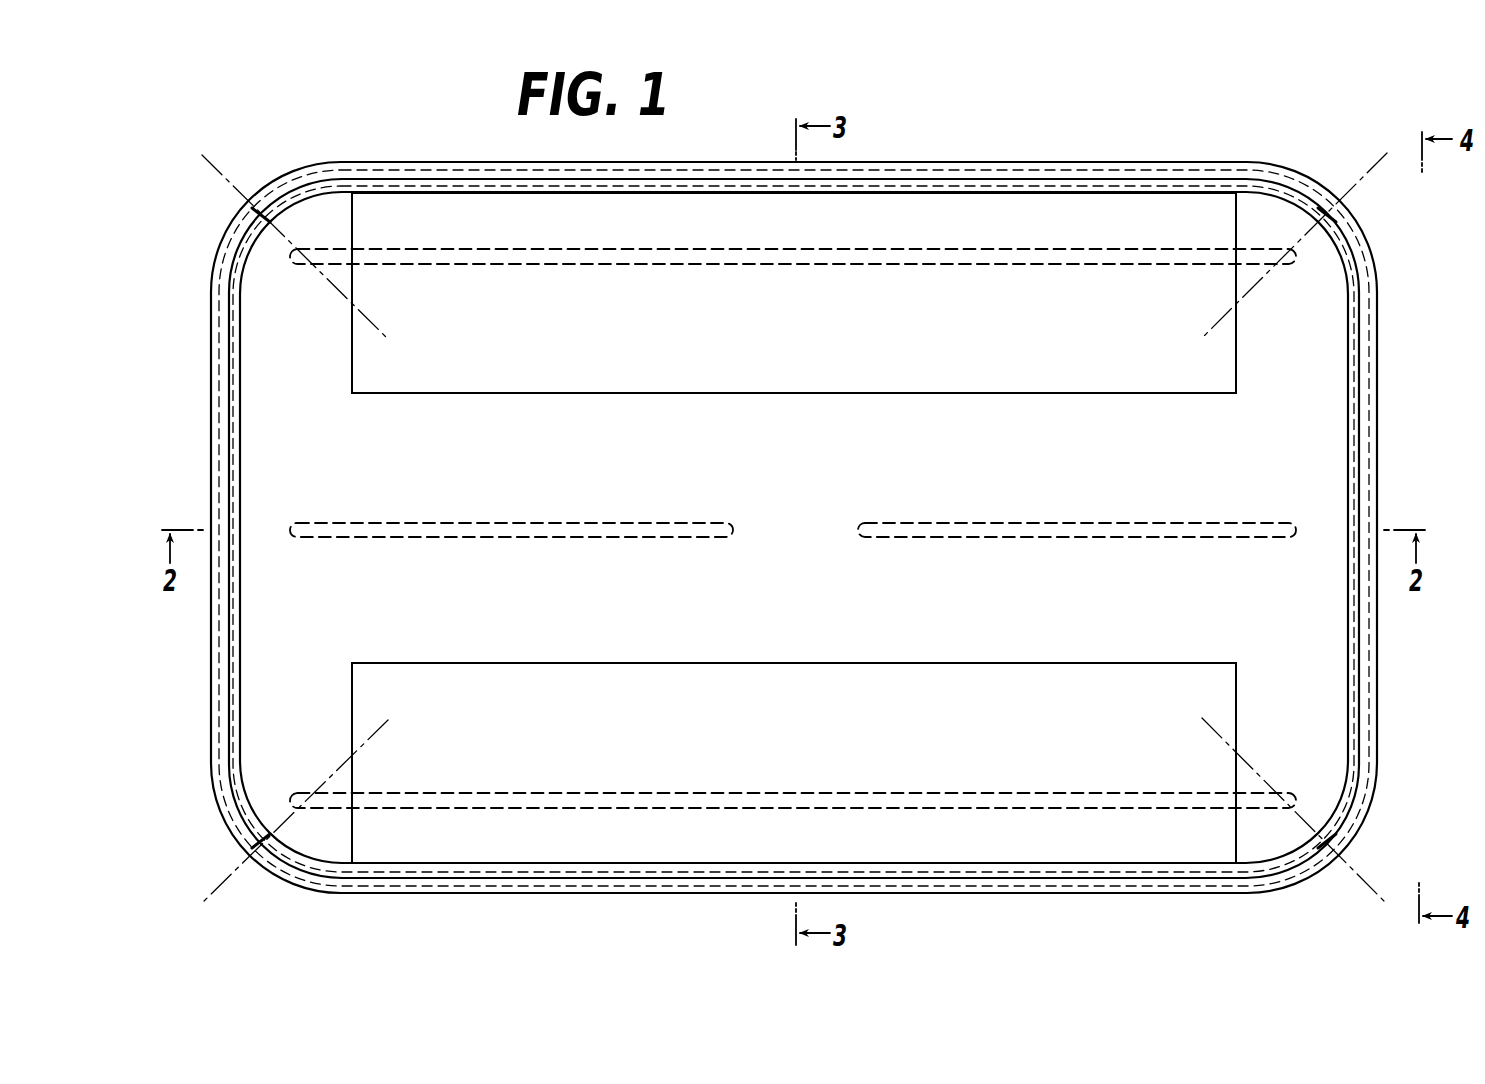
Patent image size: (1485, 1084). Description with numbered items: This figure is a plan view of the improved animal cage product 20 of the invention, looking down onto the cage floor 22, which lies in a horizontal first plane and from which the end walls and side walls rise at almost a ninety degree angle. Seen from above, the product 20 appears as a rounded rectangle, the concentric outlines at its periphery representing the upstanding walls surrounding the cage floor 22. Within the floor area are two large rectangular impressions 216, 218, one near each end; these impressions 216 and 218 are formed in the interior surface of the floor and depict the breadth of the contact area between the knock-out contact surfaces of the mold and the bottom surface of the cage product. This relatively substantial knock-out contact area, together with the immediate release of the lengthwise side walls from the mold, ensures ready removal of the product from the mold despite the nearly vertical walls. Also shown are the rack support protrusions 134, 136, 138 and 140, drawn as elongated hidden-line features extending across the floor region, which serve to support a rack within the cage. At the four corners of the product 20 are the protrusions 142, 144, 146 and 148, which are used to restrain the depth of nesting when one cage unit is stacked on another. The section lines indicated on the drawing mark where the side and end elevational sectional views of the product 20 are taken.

The product 20 is at (1105, 142).
The cage floor 22 is at (1302, 730).
The rack support protrusion 134 is at (1150, 266).
The rack support protrusion 136 is at (1033, 538).
The rack support protrusion 138 is at (1092, 790).
The rack support protrusion 140 is at (555, 538).
The protrusion 142 is at (1332, 212).
The protrusion 144 is at (1333, 843).
The protrusion 146 is at (260, 208).
The protrusion 148 is at (258, 848).
The impression 216 is at (1182, 400).
The impression 218 is at (1192, 659).